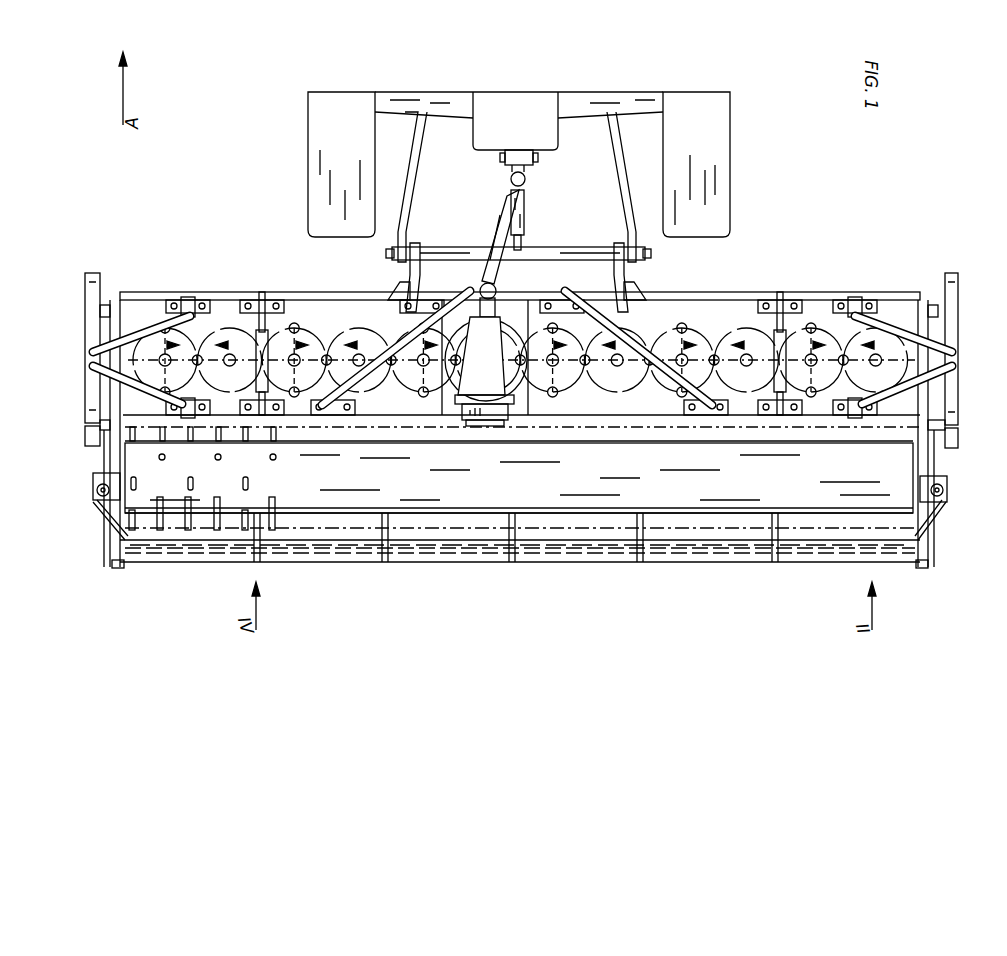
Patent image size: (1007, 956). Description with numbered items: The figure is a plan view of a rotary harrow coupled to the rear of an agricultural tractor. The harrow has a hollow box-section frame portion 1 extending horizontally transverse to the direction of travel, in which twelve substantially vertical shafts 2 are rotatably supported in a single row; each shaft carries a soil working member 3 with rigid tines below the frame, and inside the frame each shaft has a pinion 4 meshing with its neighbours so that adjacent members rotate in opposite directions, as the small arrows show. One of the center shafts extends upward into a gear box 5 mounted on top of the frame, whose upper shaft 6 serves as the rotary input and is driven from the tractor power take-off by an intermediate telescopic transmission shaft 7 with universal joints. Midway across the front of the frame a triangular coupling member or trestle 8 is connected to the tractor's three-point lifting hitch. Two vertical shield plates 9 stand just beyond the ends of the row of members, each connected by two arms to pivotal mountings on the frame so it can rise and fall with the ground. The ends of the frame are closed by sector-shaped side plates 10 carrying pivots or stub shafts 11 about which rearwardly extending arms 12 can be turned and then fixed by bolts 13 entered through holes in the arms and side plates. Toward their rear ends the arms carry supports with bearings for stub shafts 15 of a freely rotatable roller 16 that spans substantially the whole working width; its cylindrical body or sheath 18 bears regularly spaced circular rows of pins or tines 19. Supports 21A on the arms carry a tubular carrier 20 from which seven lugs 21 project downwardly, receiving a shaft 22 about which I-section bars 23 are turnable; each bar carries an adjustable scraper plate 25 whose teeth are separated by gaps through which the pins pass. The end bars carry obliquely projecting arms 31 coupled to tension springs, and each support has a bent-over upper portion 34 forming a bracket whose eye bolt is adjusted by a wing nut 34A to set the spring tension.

The hollow box-section frame portion 1 is at (740, 305).
The shafts 2 is at (572, 380).
The soil working members 3 is at (205, 386).
The pinions 4 is at (636, 380).
The gear box 5 is at (522, 400).
The upper shaft 6 is at (504, 338).
The intermediate telescopic transmission shaft 7 is at (503, 207).
The coupling member or trestle 8 is at (440, 285).
The shield plates 9 is at (92, 380).
The side plates 10 is at (122, 300).
The pivots or stub shafts 11 is at (105, 300).
The arms 12 is at (100, 332).
The bolts 13 is at (100, 424).
The stub shafts 15 is at (913, 480).
The roller 16 is at (823, 518).
The hollow right circular cylindrical body or sheath 18 is at (208, 512).
The pins or tines 19 is at (162, 530).
The tubular carrier 20 is at (713, 556).
The lugs 21 is at (512, 563).
The supports 21A is at (120, 568).
The shaft 22 is at (412, 549).
The bars 23 is at (438, 557).
The plates 25 is at (790, 508).
The arms 31 is at (104, 522).
The upper portion 34 is at (93, 476).
The wing nuts 34A is at (92, 502).